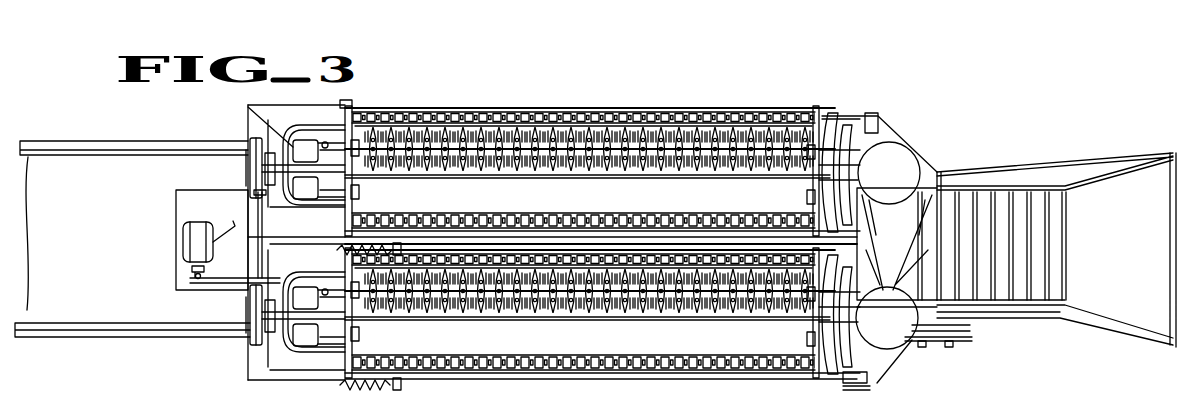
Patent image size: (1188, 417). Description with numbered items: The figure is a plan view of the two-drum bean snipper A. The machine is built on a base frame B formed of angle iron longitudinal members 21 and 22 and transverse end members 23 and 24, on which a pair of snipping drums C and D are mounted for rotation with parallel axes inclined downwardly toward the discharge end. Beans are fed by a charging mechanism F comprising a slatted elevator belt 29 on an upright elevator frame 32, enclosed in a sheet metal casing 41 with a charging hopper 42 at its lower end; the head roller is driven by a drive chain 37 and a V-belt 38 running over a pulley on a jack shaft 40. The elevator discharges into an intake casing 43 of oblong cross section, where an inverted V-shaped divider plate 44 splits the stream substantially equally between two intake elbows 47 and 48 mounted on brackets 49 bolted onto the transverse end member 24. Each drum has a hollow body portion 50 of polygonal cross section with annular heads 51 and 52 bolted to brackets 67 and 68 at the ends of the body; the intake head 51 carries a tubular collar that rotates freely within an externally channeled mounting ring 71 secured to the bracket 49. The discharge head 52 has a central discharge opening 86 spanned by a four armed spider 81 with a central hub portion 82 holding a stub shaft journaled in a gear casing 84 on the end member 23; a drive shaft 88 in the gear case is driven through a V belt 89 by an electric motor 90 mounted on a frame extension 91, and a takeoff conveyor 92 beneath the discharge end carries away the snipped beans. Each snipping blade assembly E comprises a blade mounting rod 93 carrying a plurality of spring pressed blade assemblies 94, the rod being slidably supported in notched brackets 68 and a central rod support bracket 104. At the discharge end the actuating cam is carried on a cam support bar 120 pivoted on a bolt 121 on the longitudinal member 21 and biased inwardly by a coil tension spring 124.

The angle iron longitudinal member 21 is at (286, 113).
The angle iron longitudinal member 22 is at (302, 233).
The transverse end member 23 is at (253, 362).
The transverse end member 24 is at (870, 123).
The slatted elevator belt 29 is at (943, 218).
The elevator frame 32 is at (1007, 184).
The drive chain 37 is at (961, 326).
The V-belt 38 is at (965, 336).
The jack shaft 40 is at (953, 345).
The sheet metal casing 41 is at (1018, 192).
The charging hopper 42 is at (1133, 259).
The intake casing 43 is at (898, 340).
The divider plate 44 is at (897, 246).
The intake elbow 47 is at (897, 333).
The intake elbow 48 is at (896, 172).
The bracket 49 is at (845, 128).
The hollow body portion 50 is at (483, 202).
The annular head 51 is at (831, 107).
The discharge head 52 is at (363, 103).
The bracket 67 is at (361, 193).
The bracket 68 is at (357, 152).
The mounting ring 71 is at (833, 117).
The four armed spider 81 is at (312, 132).
The central hub portion 82 is at (277, 157).
The gear casing 84 is at (253, 182).
The central discharge opening 86 is at (293, 142).
The drive shaft 88 is at (257, 215).
The V belt 89 is at (197, 282).
The electric motor 90 is at (190, 235).
The frame extension 91 is at (182, 253).
The takeoff conveyor 92 is at (90, 237).
The blade mounting rod 93 is at (571, 128).
The spring pressed blade assembly 94 is at (541, 174).
The central rod support bracket 104 is at (568, 360).
The cam support bar 120 is at (380, 80).
The bolt 121 is at (378, 72).
The coil tension spring 124 is at (405, 218).
The two-drum bean snipper A is at (631, 99).
The base frame B is at (311, 374).
The snipping drum C is at (690, 352).
The snipping drum D is at (640, 204).
The snipping blade assembly E is at (728, 216).
The charging mechanism F is at (1017, 277).